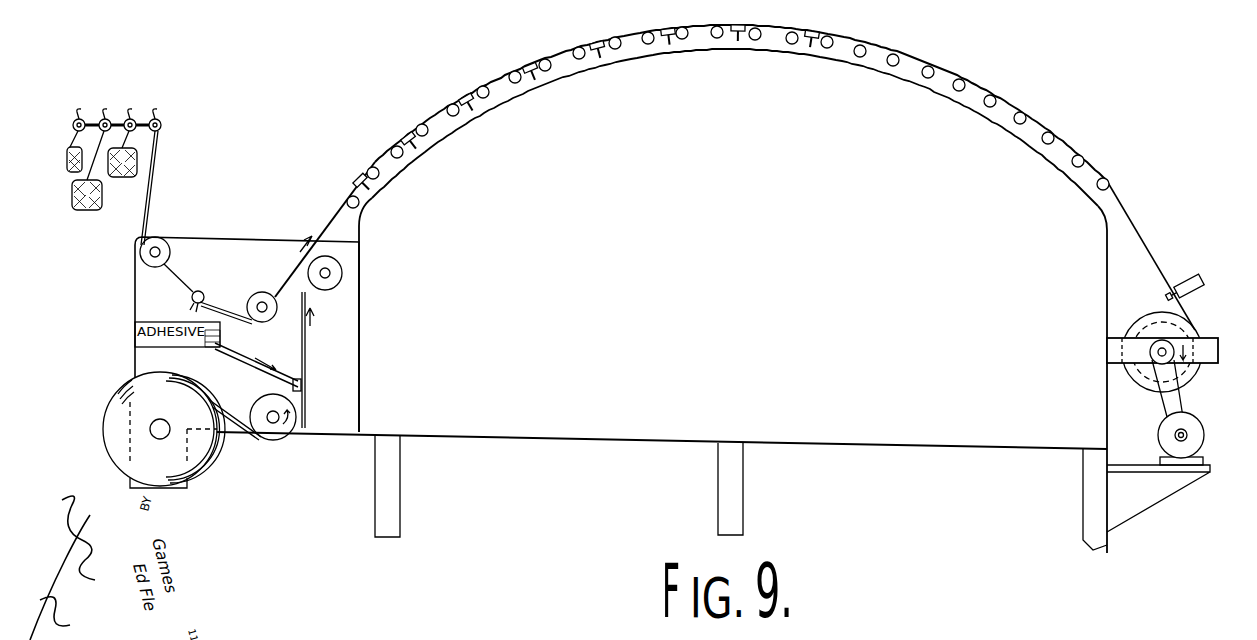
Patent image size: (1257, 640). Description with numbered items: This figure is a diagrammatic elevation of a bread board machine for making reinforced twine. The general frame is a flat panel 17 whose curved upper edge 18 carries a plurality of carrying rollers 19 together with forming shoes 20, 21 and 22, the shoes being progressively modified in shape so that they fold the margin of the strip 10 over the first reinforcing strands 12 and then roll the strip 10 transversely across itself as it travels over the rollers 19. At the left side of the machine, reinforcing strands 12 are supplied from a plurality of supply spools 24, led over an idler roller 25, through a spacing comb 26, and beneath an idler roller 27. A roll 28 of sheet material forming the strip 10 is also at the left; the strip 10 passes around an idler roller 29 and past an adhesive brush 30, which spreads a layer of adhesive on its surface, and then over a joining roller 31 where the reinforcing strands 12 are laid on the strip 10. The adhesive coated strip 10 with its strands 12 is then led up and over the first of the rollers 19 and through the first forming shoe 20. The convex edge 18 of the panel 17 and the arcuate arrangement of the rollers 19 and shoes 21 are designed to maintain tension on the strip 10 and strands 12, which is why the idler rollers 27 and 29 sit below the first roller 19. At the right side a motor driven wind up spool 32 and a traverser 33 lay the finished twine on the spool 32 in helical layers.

The strip 10 is at (333, 216).
The reinforcing strands 12 is at (153, 165).
The flat panel 17 is at (880, 437).
The curved upper edge 18 is at (695, 52).
The carrying rollers 19 is at (965, 85).
The forming shoe 20 is at (355, 178).
The forming shoe 21 is at (460, 95).
The forming shoe 22 is at (592, 40).
The supply spools 24 is at (100, 204).
The idler roller 25 is at (170, 254).
The comb 26 is at (205, 295).
The idler roller 27 is at (280, 278).
The roll 28 is at (210, 456).
The idler roller 29 is at (254, 397).
The adhesive brush 30 is at (303, 367).
The joining roller 31 is at (342, 275).
The wind up spool 32 is at (1190, 385).
The traverser 33 is at (1205, 286).